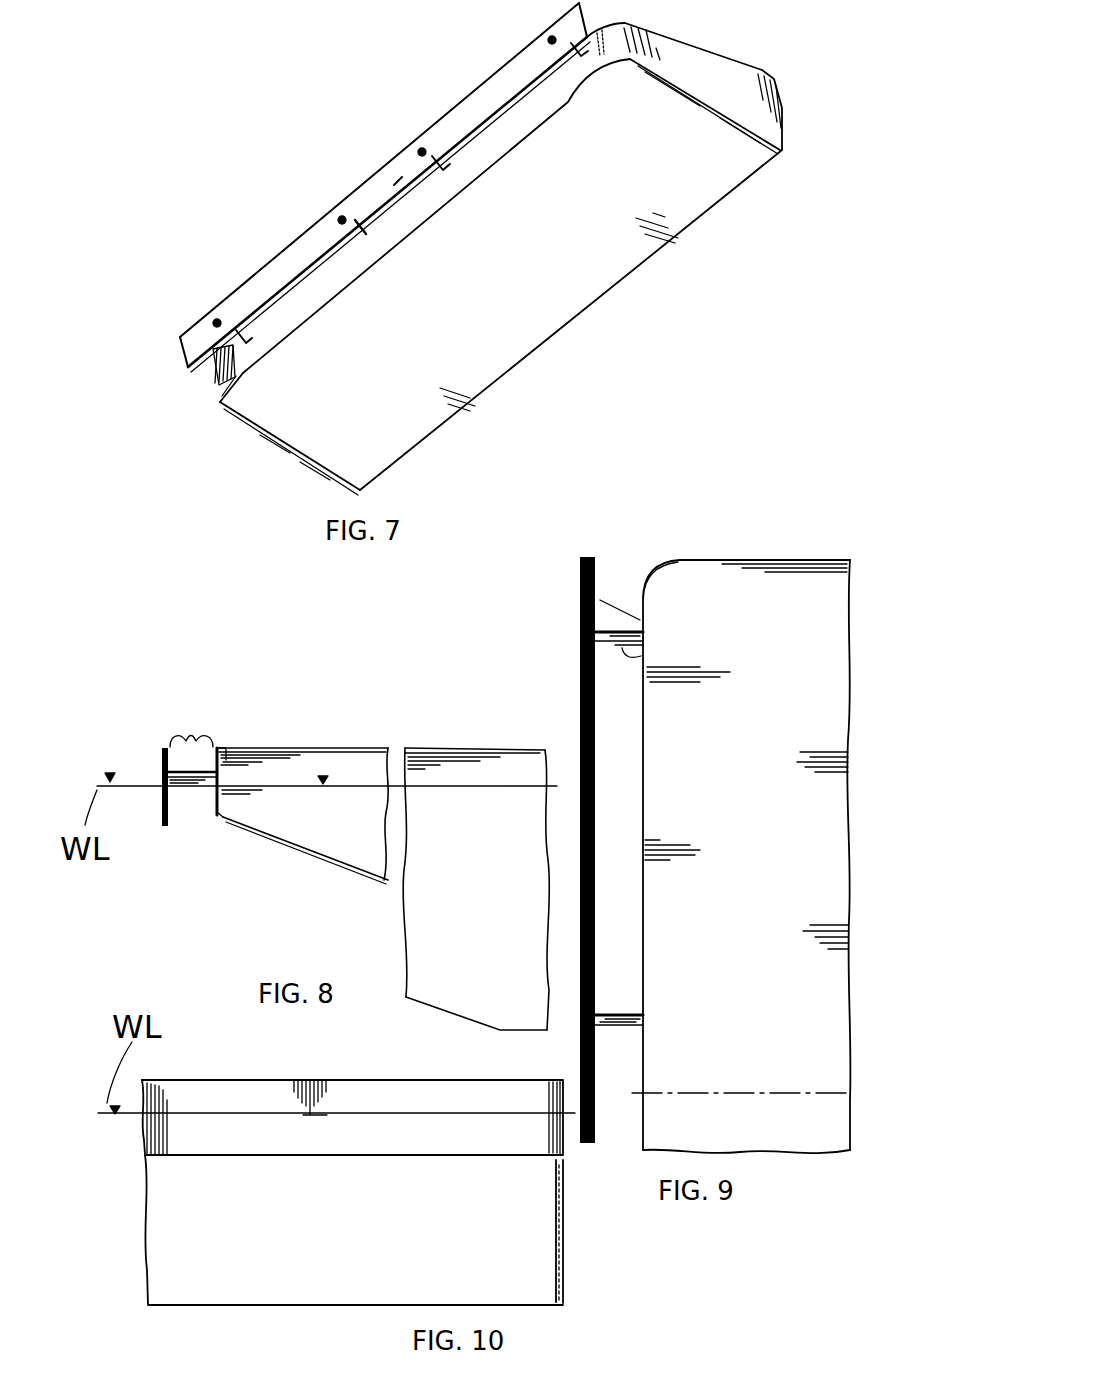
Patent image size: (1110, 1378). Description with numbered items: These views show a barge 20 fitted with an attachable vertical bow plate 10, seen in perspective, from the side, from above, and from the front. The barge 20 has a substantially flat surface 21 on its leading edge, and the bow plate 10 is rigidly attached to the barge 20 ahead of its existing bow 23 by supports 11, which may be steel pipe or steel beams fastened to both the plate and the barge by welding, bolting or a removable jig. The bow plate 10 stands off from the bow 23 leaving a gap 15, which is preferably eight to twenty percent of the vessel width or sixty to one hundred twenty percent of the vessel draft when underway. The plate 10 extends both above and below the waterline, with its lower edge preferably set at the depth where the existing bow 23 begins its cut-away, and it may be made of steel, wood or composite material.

In FIG. 7, the bow plate 10 is at (262, 262).
In FIG. 8, the bow plate 10 is at (153, 762).
In FIG. 9, the bow plate 10 is at (577, 594).
In FIG. 10, the bow plate 10 is at (232, 1077).
In FIG. 7, the supports 11 is at (577, 58).
In FIG. 8, the supports 11 is at (188, 792).
In FIG. 9, the supports 11 is at (630, 654).
In FIG. 8, the gap 15 is at (194, 717).
In FIG. 7, the barge 20 is at (298, 466).
In FIG. 8, the barge 20 is at (225, 745).
In FIG. 9, the barge 20 is at (680, 572).
In FIG. 10, the barge 20 is at (568, 1253).
In FIG. 7, the substantially flat surface 21 is at (218, 370).
In FIG. 8, the substantially flat surface 21 is at (215, 814).
In FIG. 9, the substantially flat surface 21 is at (637, 620).
In FIG. 7, the bow 23 is at (222, 404).
In FIG. 8, the bow 23 is at (221, 754).
In FIG. 9, the bow 23 is at (637, 593).
In FIG. 10, the bow 23 is at (567, 1215).